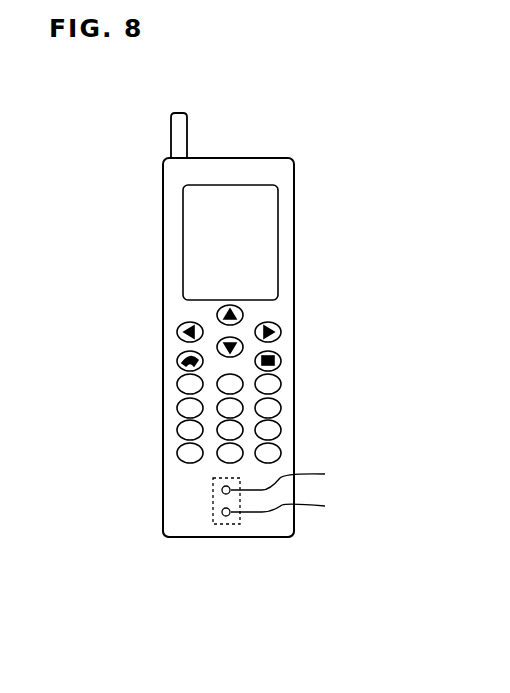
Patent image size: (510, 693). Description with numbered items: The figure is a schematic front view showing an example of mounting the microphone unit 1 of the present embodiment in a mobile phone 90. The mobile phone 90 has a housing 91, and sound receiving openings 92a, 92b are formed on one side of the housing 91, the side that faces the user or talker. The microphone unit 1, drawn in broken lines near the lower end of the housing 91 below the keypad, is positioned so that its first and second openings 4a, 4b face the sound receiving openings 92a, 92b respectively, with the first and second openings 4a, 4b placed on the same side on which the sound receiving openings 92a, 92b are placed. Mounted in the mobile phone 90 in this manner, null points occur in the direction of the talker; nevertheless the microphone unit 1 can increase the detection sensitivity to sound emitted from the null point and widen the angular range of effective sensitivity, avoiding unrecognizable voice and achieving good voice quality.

The mobile phone 90 is at (296, 308).
The housing 91 is at (273, 525).
The microphone unit 1 is at (212, 489).
The first opening 4a is at (222, 490).
The second opening 4b is at (222, 512).
The sound receiving opening 92a is at (296, 477).
The sound receiving opening 92b is at (296, 507).